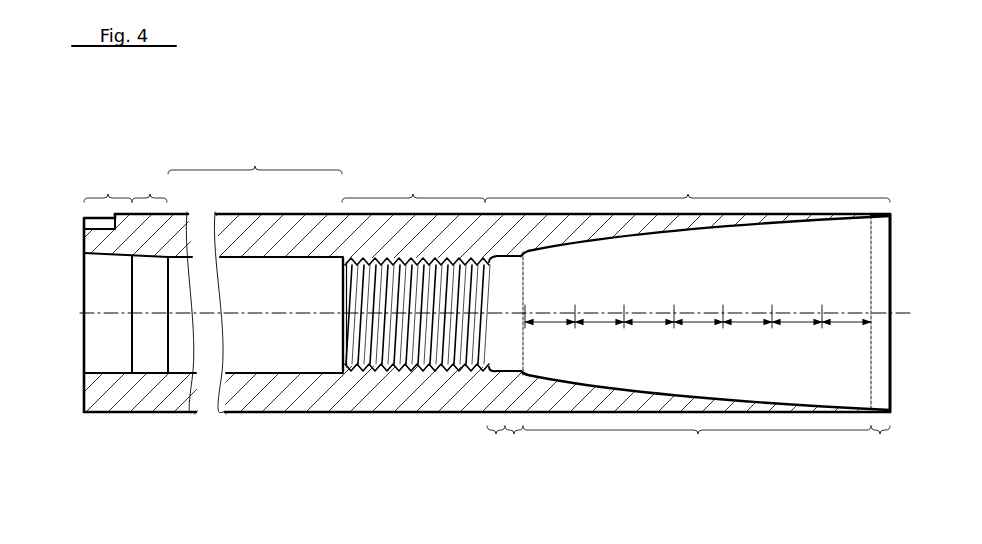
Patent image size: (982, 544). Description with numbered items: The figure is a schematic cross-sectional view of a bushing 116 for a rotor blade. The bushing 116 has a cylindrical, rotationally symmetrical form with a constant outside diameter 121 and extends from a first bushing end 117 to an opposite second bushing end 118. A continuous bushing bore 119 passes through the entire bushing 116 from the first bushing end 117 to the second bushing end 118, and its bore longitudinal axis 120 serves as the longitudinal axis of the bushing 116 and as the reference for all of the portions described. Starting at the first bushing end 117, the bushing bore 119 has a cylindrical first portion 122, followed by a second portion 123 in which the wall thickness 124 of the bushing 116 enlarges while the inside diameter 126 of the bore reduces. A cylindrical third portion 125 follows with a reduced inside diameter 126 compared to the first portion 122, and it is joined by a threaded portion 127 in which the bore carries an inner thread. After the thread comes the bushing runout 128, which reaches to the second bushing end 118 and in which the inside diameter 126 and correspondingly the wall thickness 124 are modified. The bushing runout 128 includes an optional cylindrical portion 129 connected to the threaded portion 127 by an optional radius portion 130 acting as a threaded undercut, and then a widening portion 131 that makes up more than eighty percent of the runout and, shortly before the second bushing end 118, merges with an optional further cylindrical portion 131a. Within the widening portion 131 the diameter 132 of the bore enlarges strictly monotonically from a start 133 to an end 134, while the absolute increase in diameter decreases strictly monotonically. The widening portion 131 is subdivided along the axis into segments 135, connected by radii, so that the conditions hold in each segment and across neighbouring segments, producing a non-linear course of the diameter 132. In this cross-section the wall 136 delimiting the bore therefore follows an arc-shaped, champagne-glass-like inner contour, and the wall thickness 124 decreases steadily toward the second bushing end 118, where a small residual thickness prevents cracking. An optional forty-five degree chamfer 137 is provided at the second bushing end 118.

The bushing 116 is at (524, 103).
The first bushing end 117 is at (66, 340).
The second bushing end 118 is at (898, 360).
The bushing bore 119 is at (115, 298).
The bore longitudinal axis 120 is at (147, 316).
The outside diameter 121 is at (314, 183).
The first portion 122 is at (108, 195).
The second portion 123 is at (150, 195).
The wall thickness 124 is at (245, 337).
The third portion 125 is at (255, 258).
The inside diameter 126 is at (276, 373).
The threaded portion 127 is at (416, 270).
The bushing runout 128 is at (687, 291).
The cylindrical portion 129 is at (514, 434).
The radius portion 130 is at (496, 434).
The widening portion 131 is at (697, 444).
The further cylindrical portion 131a is at (880, 434).
The diameter 132 is at (756, 402).
The start of the widening portion 133 is at (525, 292).
The end of the widening portion 134 is at (872, 275).
The segments 135 is at (600, 330).
The wall 136 is at (787, 404).
The chamfer 137 is at (893, 214).